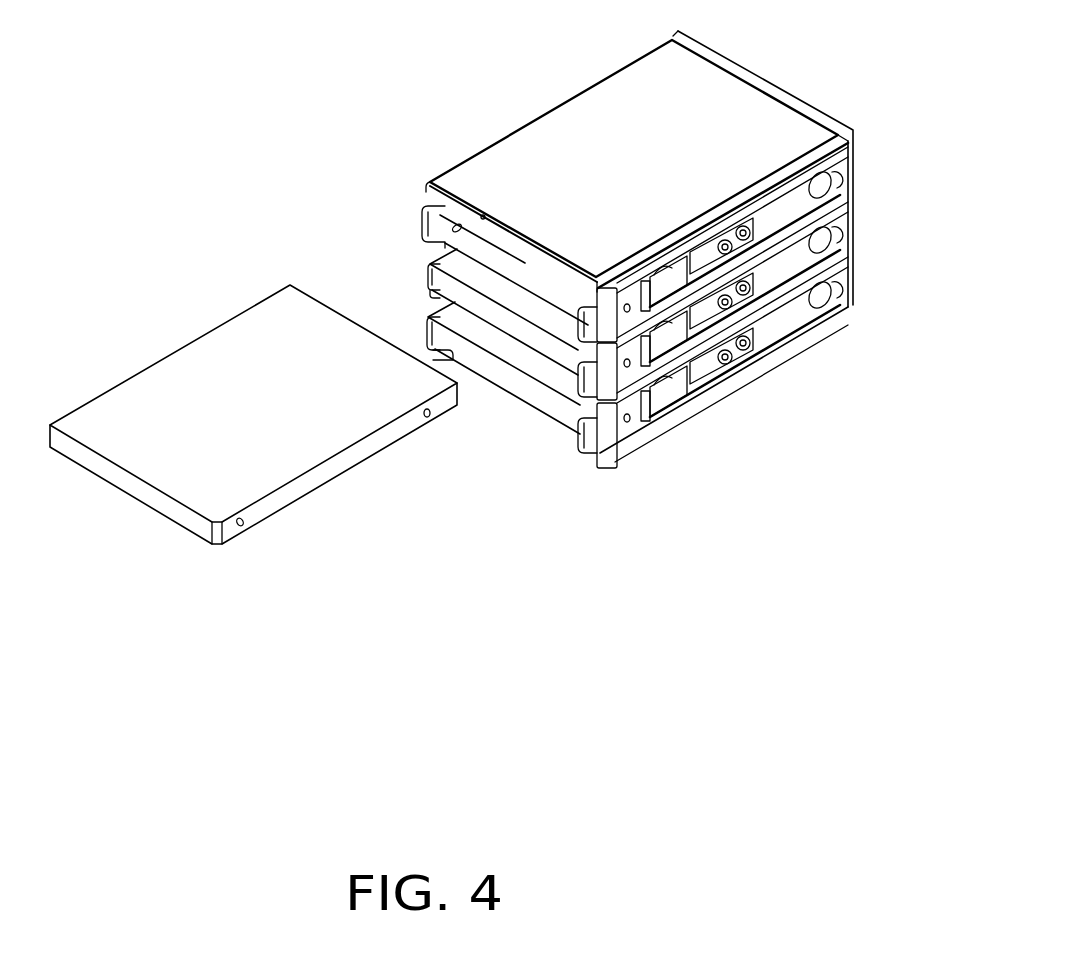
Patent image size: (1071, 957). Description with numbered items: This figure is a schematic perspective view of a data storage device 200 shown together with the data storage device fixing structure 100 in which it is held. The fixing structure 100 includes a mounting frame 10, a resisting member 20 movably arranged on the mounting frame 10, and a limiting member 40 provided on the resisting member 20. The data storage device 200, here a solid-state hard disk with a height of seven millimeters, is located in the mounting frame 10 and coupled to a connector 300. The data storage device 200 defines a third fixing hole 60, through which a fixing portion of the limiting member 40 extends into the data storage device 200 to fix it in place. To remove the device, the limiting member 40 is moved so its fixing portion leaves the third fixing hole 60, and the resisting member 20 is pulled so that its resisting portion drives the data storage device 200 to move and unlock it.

The data storage device fixing structure 100 is at (572, 87).
The mounting frame 10 is at (806, 137).
The connector 300 is at (762, 88).
The resisting member 20 is at (778, 328).
The limiting member 40 is at (698, 378).
The data storage device 200 is at (208, 357).
The third fixing hole 60 is at (245, 523).